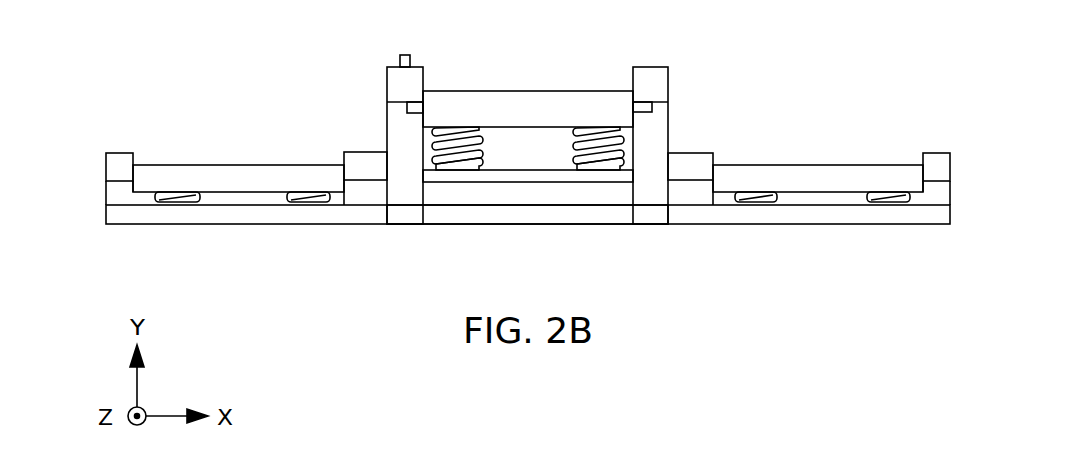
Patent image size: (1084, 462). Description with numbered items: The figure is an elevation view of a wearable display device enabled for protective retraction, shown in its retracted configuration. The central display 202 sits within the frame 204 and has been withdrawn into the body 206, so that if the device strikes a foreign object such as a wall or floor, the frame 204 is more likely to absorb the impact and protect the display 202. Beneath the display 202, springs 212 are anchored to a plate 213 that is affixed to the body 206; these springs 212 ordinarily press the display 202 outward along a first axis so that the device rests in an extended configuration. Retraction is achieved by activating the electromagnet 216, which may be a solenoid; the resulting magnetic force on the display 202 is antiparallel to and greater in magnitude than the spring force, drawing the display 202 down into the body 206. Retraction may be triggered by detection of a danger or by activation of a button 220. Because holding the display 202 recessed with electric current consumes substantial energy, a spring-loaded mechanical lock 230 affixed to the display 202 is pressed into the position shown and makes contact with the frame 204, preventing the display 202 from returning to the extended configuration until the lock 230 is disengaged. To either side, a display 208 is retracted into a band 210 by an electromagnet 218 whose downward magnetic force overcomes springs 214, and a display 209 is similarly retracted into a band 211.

The display 202 is at (528, 105).
The frame 204 is at (650, 83).
The body 206 is at (537, 188).
The display 208 is at (238, 183).
The display 209 is at (818, 178).
The band 210 is at (120, 168).
The band 211 is at (942, 170).
The springs 212 is at (615, 147).
The plate 213 is at (577, 175).
The springs 214 is at (172, 203).
The electromagnet 216 is at (527, 213).
The electromagnet 218 is at (247, 214).
The button 220 is at (402, 55).
The mechanical lock 230 is at (407, 107).